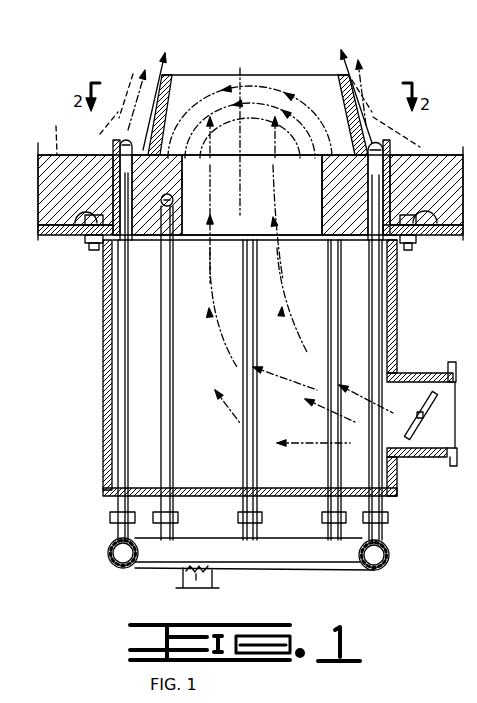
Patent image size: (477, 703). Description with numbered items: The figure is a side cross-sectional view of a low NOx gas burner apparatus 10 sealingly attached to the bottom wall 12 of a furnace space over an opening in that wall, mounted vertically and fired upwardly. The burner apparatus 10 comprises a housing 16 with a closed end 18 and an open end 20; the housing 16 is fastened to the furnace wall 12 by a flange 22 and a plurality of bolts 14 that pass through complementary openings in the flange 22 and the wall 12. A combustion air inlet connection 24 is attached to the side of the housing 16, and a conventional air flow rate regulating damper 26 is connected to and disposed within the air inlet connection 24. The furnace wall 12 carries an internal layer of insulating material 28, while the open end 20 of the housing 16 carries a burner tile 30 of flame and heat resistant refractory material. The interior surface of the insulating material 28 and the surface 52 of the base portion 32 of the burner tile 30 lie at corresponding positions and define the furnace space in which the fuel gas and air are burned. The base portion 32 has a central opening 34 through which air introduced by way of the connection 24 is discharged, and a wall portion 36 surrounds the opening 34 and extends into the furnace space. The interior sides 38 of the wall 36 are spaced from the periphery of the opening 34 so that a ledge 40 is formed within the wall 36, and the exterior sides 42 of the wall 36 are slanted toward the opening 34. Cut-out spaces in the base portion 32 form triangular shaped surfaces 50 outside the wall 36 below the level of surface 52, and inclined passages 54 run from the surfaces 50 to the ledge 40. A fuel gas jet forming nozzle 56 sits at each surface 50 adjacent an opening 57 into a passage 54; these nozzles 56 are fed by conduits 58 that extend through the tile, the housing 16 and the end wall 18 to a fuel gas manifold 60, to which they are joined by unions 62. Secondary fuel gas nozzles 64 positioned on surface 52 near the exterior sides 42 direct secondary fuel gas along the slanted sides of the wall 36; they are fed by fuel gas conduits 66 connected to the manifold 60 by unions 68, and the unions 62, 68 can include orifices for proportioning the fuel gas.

The burner apparatus 10 is at (278, 58).
The furnace wall 12 is at (457, 242).
The bolts 14 is at (250, 246).
The housing 16 is at (103, 368).
The closed end 18 is at (147, 490).
The open end 20 is at (195, 241).
The flange 22 is at (100, 250).
The combustion air inlet connection 24 is at (455, 460).
The air flow rate regulating damper 26 is at (420, 412).
The insulating material 28 is at (79, 174).
The burner tile 30 is at (345, 245).
The base portion 32 is at (337, 197).
The central opening 34 is at (355, 217).
The wall portion 36 is at (343, 62).
The interior sides 38 is at (337, 80).
The ledge 40 is at (250, 141).
The exterior sides 42 is at (365, 93).
The triangular shaped surfaces 50 is at (100, 134).
The surface 52 is at (371, 140).
The passages 54 is at (133, 100).
The fuel gas jet forming nozzle 56 is at (176, 198).
The opening 57 is at (183, 180).
The conduits 58 is at (168, 320).
The fuel gas manifold 60 is at (157, 568).
The unions 62 is at (170, 517).
The secondary fuel gas nozzles 64 is at (126, 136).
The fuel gas conduits 66 is at (123, 368).
The unions 68 is at (118, 517).